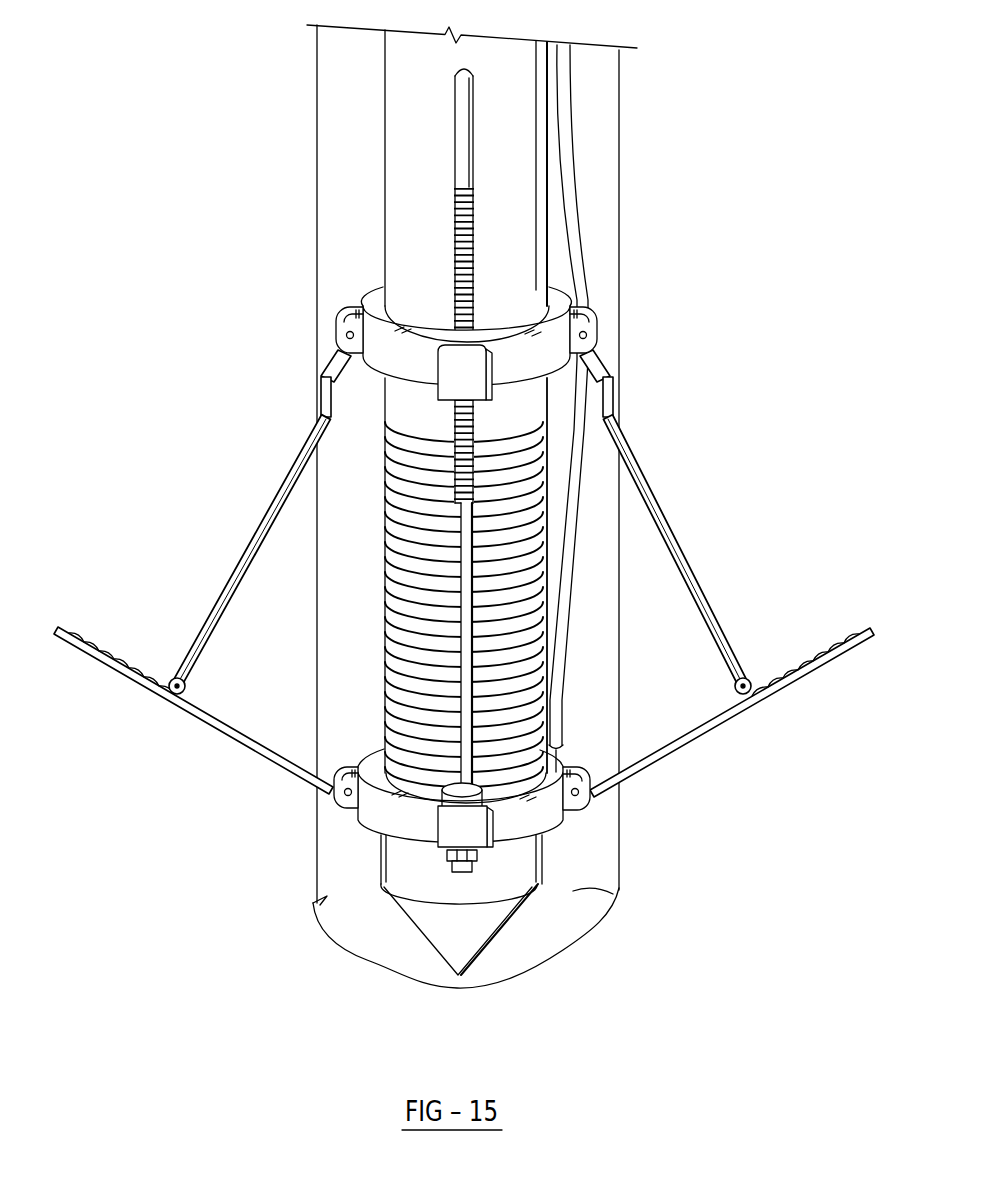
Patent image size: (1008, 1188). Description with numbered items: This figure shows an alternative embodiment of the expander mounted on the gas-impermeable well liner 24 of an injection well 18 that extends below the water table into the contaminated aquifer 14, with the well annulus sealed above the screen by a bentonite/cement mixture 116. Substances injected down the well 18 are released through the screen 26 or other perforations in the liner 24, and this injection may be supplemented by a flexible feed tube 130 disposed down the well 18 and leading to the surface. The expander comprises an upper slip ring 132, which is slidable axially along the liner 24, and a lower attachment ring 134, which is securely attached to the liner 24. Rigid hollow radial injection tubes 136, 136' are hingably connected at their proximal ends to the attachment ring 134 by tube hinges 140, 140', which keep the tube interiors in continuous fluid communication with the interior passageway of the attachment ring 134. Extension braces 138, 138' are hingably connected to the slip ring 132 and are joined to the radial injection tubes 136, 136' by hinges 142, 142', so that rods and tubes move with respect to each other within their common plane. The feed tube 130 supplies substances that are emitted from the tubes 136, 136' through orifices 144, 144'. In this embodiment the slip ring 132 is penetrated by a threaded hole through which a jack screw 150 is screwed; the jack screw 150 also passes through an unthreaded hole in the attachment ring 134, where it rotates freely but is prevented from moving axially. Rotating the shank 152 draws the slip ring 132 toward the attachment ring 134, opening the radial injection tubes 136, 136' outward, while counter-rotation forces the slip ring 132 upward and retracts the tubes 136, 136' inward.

The aquifer 14 is at (802, 208).
The injection well 18 is at (315, 202).
The bentonite/cement mixture 116 is at (340, 127).
The well liner 24 is at (385, 525).
The screen 26 is at (400, 597).
The flexible feed tube 130 is at (565, 137).
The slip ring 132 is at (592, 337).
The attachment ring 134 is at (527, 822).
The radial injection tube 136 is at (193, 736).
The radial injection tube 136' is at (732, 723).
The extension brace 138 is at (262, 518).
The extension brace 138' is at (691, 518).
The tube hinge 140 is at (273, 833).
The tube hinge 140' is at (656, 812).
The hinge 142 is at (116, 730).
The hinge 142' is at (805, 726).
The orifices 144 is at (109, 608).
The orifices 144' is at (805, 624).
The jack screw 150 is at (483, 445).
The shank 152 is at (462, 108).